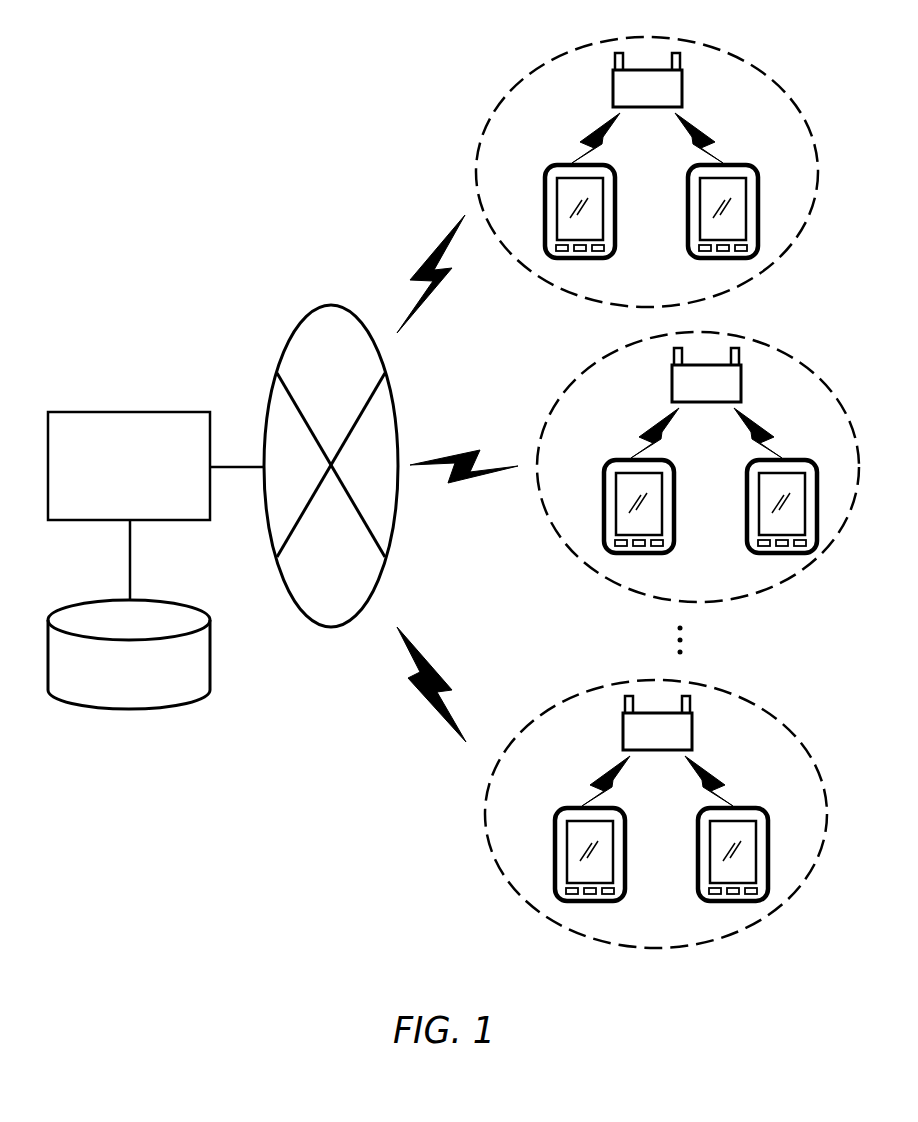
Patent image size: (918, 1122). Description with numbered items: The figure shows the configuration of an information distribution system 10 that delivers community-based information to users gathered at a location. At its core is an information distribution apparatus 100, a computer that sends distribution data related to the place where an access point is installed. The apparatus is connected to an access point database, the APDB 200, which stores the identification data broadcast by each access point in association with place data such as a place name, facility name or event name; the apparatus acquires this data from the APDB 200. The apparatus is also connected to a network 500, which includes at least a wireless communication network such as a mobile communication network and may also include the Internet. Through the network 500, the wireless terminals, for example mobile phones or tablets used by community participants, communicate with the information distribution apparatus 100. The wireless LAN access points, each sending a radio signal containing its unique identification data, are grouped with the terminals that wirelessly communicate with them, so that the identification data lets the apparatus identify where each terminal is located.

The information distribution system 10 is at (284, 212).
The information distribution apparatus 100 is at (118, 411).
The access point database (APDB) 200 is at (137, 709).
The network 500 is at (330, 628).